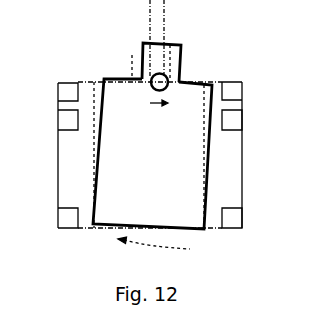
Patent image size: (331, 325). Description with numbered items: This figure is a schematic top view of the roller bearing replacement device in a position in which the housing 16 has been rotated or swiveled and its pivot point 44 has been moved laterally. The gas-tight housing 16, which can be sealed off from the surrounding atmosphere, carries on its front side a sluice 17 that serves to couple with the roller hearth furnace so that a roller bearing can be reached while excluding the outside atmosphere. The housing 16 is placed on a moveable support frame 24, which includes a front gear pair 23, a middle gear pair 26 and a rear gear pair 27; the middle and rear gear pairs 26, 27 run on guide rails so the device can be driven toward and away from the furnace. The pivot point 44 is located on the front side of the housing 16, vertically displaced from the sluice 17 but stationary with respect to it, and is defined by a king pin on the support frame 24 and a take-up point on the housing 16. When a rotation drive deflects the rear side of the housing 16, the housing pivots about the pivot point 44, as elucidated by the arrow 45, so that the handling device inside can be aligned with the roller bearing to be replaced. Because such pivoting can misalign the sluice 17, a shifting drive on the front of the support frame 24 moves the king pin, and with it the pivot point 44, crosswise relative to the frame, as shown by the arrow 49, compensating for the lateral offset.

The housing 16 is at (208, 163).
The sluice 17 is at (182, 63).
The front gear pair 23 is at (232, 91).
The support frame 24 is at (58, 148).
The middle gear pair 26 is at (231, 119).
The rear gear pair 27 is at (231, 219).
The pivot point 44 is at (150, 76).
The arrow 45 is at (142, 239).
The arrow 49 is at (157, 103).